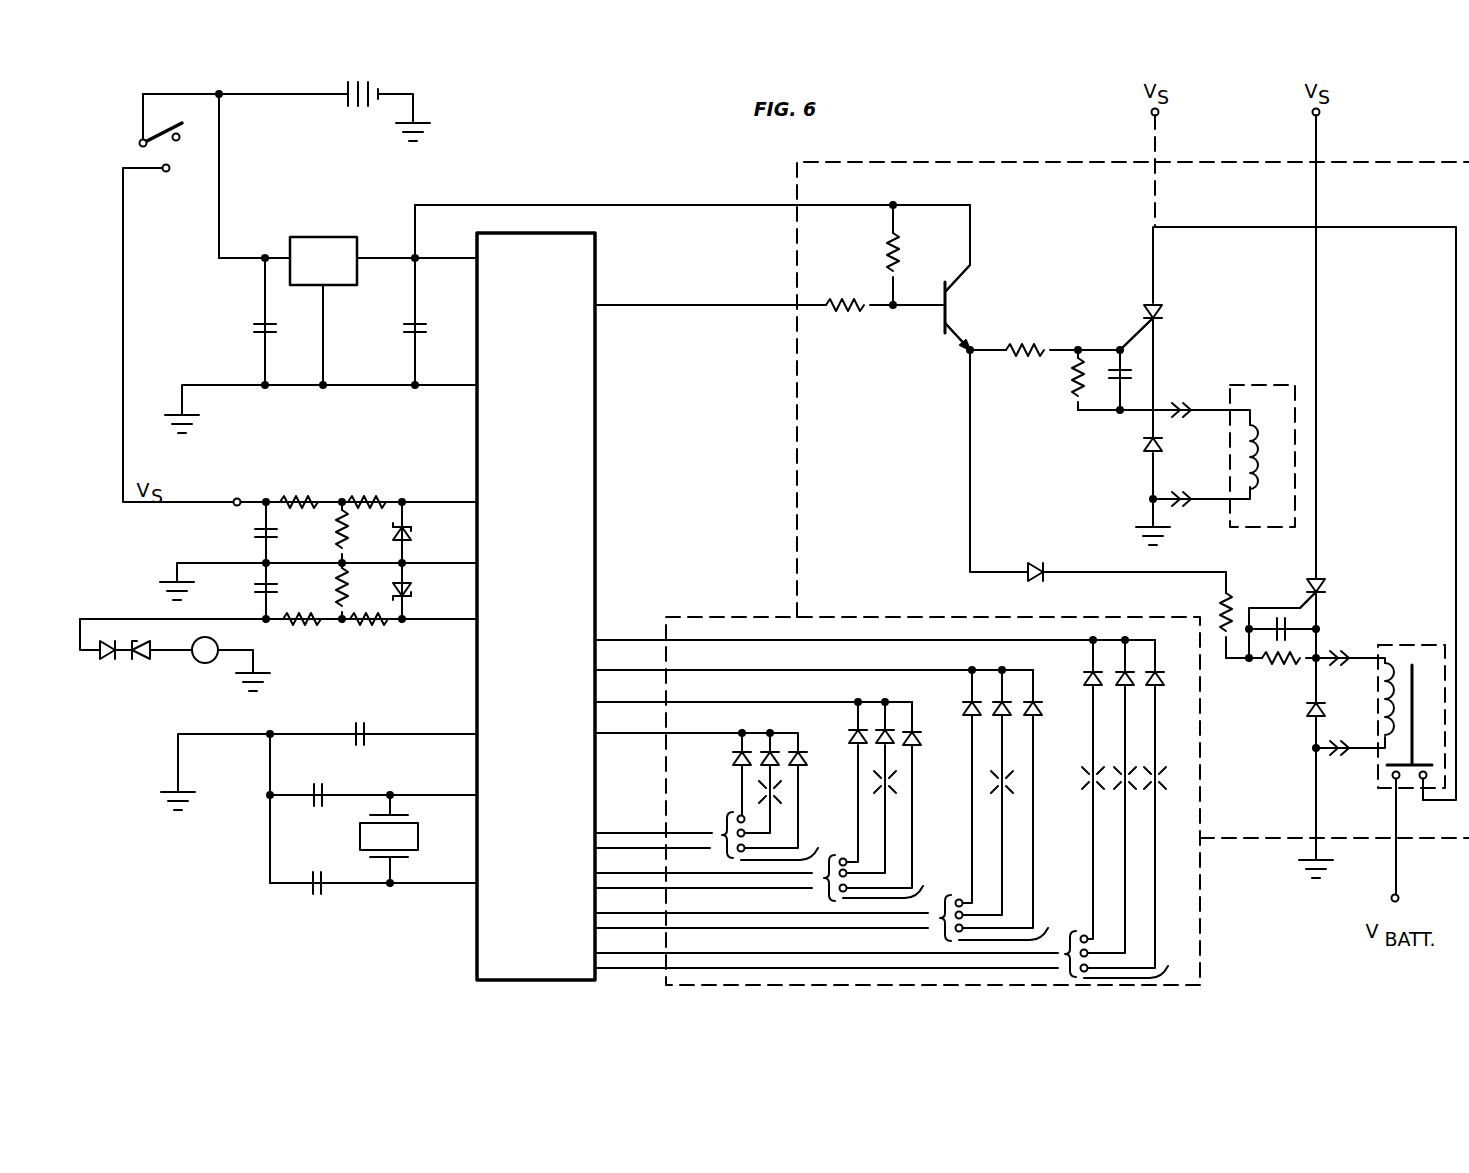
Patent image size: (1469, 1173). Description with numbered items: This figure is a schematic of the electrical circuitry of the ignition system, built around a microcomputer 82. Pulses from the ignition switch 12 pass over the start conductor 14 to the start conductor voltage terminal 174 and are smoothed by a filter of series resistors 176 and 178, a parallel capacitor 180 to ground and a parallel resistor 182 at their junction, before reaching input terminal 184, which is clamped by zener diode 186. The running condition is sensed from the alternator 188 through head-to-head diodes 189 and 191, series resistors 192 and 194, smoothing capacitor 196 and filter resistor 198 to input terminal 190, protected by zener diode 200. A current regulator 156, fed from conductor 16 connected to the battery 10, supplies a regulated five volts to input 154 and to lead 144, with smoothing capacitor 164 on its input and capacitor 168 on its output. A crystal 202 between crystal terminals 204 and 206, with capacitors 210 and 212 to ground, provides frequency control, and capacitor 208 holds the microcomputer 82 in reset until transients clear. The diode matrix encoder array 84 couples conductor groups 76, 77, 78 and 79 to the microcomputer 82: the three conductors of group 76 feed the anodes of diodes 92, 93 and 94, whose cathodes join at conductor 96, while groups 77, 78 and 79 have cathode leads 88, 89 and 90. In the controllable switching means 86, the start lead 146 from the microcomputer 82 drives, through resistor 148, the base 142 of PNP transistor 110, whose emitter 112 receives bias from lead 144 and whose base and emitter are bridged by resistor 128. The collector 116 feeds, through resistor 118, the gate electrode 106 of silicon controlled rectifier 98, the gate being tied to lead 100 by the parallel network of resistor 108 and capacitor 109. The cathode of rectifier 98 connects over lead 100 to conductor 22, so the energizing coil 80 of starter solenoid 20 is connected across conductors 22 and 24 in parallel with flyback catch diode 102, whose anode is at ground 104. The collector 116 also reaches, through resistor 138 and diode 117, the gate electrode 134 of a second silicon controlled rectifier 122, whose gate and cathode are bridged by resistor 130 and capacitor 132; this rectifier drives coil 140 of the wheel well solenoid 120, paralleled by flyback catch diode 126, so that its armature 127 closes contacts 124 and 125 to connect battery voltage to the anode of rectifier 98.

The battery 10 is at (347, 106).
The ignition switch 12 is at (140, 140).
The start conductor 14 is at (125, 249).
The conductor 16 is at (222, 203).
The starter solenoid 20 is at (1257, 383).
The conductor 22 is at (1212, 405).
The conductor 24 is at (1208, 504).
The conductor group 76 is at (655, 952).
The conductor group 77 is at (655, 912).
The conductor group 78 is at (655, 870).
The conductor group 79 is at (633, 833).
The energizing coil 80 is at (1259, 487).
The microcomputer 82 is at (603, 443).
The diode matrix encoder array 84 is at (755, 615).
The controllable switching means 86 is at (1003, 160).
The cathode lead 88 is at (760, 671).
The cathode lead 89 is at (765, 703).
The cathode lead 90 is at (730, 733).
The diode 92 is at (1088, 680).
The diode 93 is at (1122, 689).
The diode 94 is at (1158, 689).
The conductor 96 is at (710, 640).
The silicon controlled rectifier 98 is at (1138, 306).
The lead 100 is at (1156, 354).
The flyback catch diode 102 is at (1148, 443).
The ground 104 is at (1150, 526).
The gate electrode 106 is at (1132, 338).
The resistor 108 is at (1072, 386).
The capacitor 109 is at (1113, 386).
The PNP transistor 110 is at (962, 311).
The emitter 112 is at (972, 290).
The collector 116 is at (962, 320).
The diode 117 is at (1042, 570).
The resistor 118 is at (1024, 356).
The wheel well solenoid 120 is at (1430, 643).
The second silicon controlled rectifier 122 is at (1326, 589).
The contact 124 is at (1422, 790).
The contact 125 is at (1393, 780).
The flyback catch diode 126 is at (1308, 719).
The armature 127 is at (1409, 664).
The resistor 128 is at (888, 246).
The resistor 130 is at (1268, 661).
The capacitor 132 is at (1276, 622).
The gate electrode 134 is at (1305, 582).
The resistor 138 is at (1221, 616).
The coil 140 is at (1384, 714).
The base 142 is at (940, 311).
The lead 144 is at (638, 203).
The start lead 146 is at (677, 303).
The resistor 148 is at (846, 318).
The input terminal 154 is at (475, 255).
The current regulator 156 is at (340, 237).
The smoothing capacitor 164 is at (262, 325).
The capacitor 168 is at (412, 325).
The start conductor voltage terminal 174 is at (237, 497).
The resistor 176 is at (302, 497).
The resistor 178 is at (374, 497).
The capacitor 180 is at (261, 537).
The resistor 182 is at (336, 526).
The input terminal 184 is at (477, 501).
The zener diode 186 is at (416, 536).
The alternator 188 is at (201, 664).
The zener diode 189 is at (146, 661).
The input terminal 190 is at (477, 621).
The diode 191 is at (102, 656).
The resistor 192 is at (300, 626).
The resistor 194 is at (373, 623).
The smoothing capacitor 196 is at (261, 595).
The filter resistor 198 is at (338, 592).
The zener diode 200 is at (420, 593).
The crystal 202 is at (360, 838).
The crystal terminal 204 is at (477, 795).
The crystal terminal 206 is at (477, 889).
The capacitor 208 is at (368, 734).
The capacitor 210 is at (328, 796).
The capacitor 212 is at (312, 896).